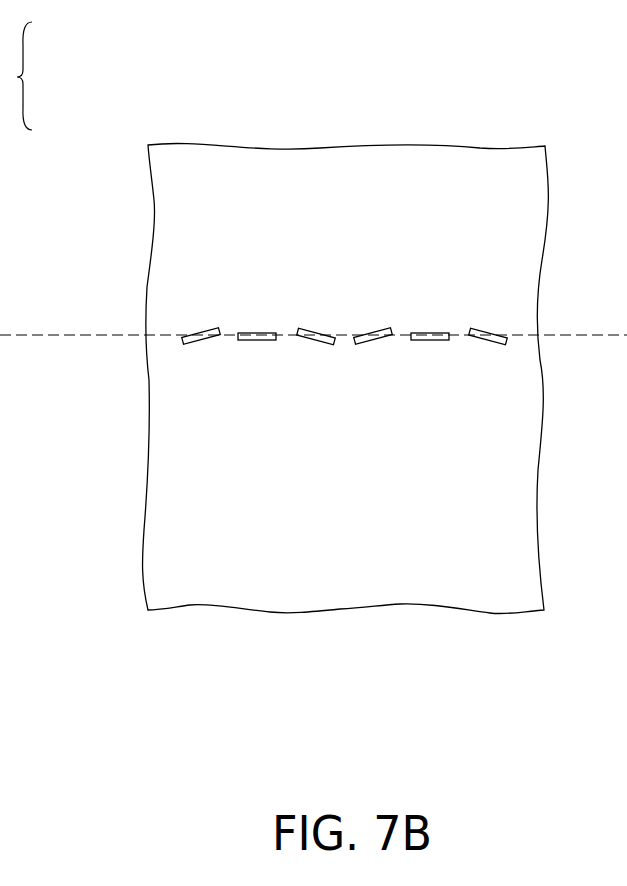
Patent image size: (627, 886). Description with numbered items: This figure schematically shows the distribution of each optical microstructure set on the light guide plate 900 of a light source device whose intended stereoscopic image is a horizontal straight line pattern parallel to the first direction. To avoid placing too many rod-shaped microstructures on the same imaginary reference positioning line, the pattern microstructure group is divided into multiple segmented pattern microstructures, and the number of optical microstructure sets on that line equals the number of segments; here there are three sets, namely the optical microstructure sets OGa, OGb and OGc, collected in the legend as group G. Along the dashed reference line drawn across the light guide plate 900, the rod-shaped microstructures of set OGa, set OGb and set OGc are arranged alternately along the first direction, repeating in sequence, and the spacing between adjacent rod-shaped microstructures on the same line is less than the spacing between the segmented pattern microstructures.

The light guide plate 900 is at (525, 198).
The optical microstructure set group G is at (41, 77).
The optical microstructure set OGa is at (192, 345).
The optical microstructure set OGb is at (263, 333).
The optical microstructure set OGc is at (315, 343).